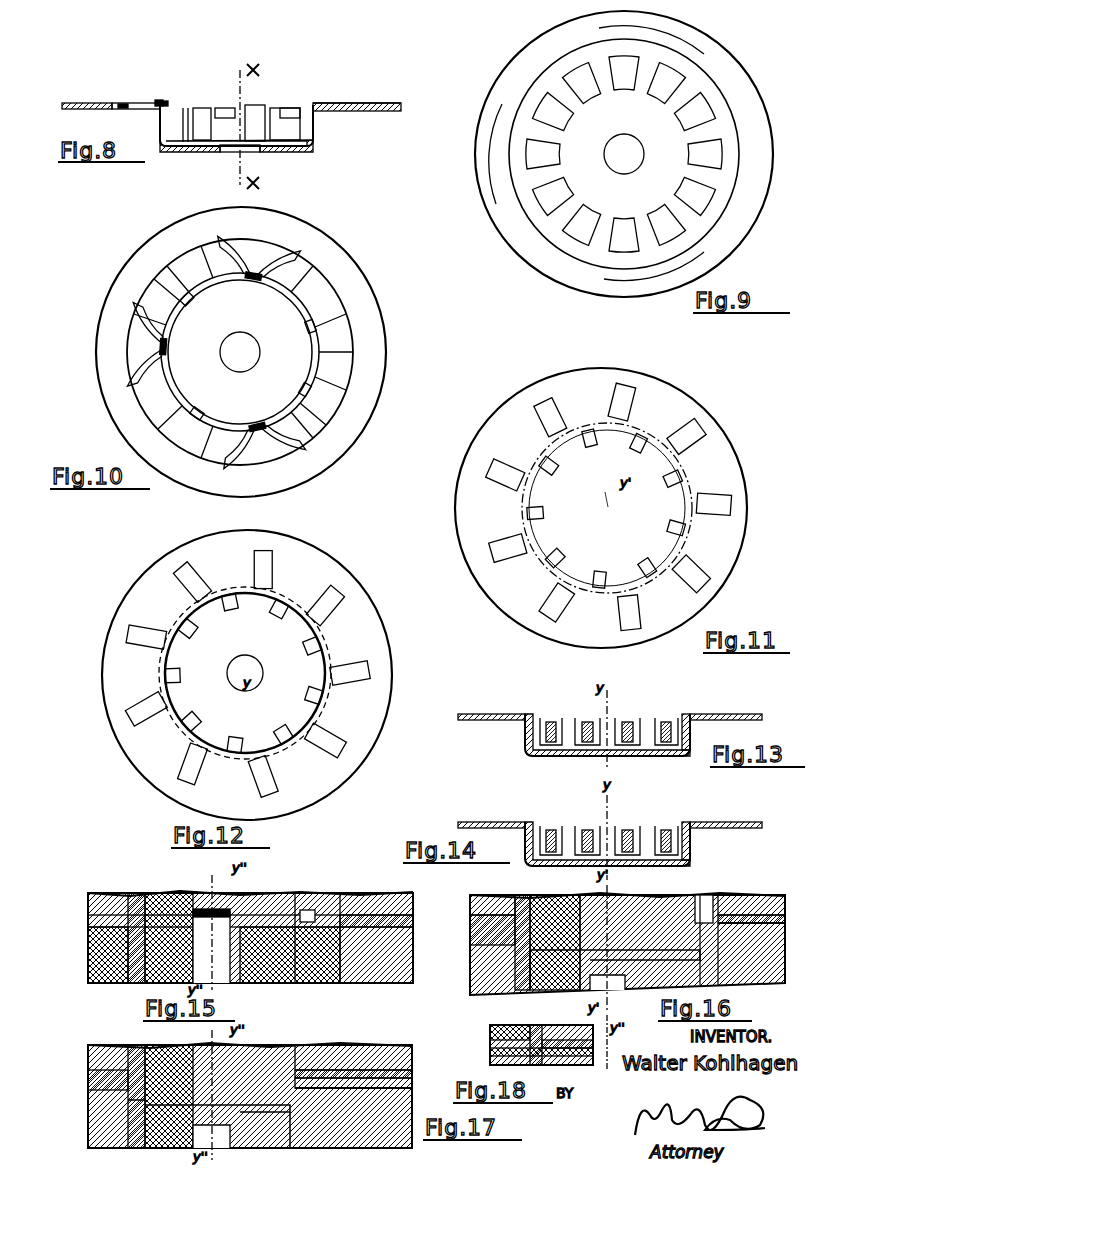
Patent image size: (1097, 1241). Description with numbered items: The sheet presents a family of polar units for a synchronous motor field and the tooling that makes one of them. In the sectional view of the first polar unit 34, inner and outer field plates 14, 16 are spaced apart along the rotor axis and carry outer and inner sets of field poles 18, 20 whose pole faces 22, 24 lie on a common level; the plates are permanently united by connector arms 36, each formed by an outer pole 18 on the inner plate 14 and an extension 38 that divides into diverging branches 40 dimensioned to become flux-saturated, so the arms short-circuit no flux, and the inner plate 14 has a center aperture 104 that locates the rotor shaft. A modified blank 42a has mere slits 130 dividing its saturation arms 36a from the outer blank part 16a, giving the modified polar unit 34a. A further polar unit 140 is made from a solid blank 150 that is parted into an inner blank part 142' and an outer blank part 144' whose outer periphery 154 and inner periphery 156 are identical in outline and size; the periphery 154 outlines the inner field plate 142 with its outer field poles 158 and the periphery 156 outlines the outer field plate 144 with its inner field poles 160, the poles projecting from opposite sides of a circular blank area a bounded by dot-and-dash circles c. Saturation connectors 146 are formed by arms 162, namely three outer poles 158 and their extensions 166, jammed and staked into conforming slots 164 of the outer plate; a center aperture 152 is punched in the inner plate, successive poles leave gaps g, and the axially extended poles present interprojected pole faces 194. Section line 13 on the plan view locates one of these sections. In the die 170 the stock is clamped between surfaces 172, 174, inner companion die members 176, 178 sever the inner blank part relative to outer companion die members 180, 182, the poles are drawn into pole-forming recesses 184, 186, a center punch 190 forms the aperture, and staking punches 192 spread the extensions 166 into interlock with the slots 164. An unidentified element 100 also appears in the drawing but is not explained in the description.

In FIG. 8, the inner field plate 14 is at (285, 155).
In FIG. 12, the inner field plate 14 is at (271, 692).
In FIG. 8, the outer field plate 16 is at (360, 101).
In FIG. 9, the outer blank part 16a is at (641, 154).
In FIG. 10, the outer blank part 16a is at (269, 352).
In FIG. 8, the outer field poles 18 is at (162, 130).
In FIG. 17, the outer field poles 18 is at (305, 1032).
In FIG. 8, the inner field poles 20 is at (184, 108).
In FIG. 8, the pole faces 22 is at (200, 112).
In FIG. 8, the pole faces 24 is at (224, 108).
In FIG. 8, the polar unit 34 is at (335, 72).
In FIG. 10, the modified polar unit 34a is at (244, 352).
In FIG. 8, the connector arms 36 is at (165, 101).
In FIG. 9, the saturation arms 36a is at (619, 129).
In FIG. 10, the saturation arms 36a is at (240, 352).
In FIG. 8, the extensions 38 is at (157, 100).
In FIG. 8, the diverging branches 40 is at (125, 103).
In FIG. 9, the modified blank 42a is at (651, 143).
In FIG. 11, the tooth 100 is at (612, 547).
In FIG. 8, the center aperture 104 is at (232, 152).
In FIG. 9, the slits 130 is at (607, 168).
In FIG. 12, the modified polar unit 140 is at (247, 662).
In FIG. 13, the modified polar unit 140 is at (695, 712).
In FIG. 14, the modified polar unit 140 is at (607, 844).
In FIG. 12, the inner field plate 142 is at (245, 673).
In FIG. 13, the inner field plate 142 is at (545, 776).
In FIG. 14, the inner field plate 142 is at (716, 872).
In FIG. 16, the inner field plate 142 is at (691, 943).
In FIG. 17, the inner field plate 142 is at (302, 1143).
In FIG. 18, the inner field plate 142 is at (634, 1022).
In FIG. 11, the inner blank part 142' is at (607, 502).
In FIG. 15, the inner blank part 142' is at (293, 893).
In FIG. 12, the outer field plate 144 is at (303, 523).
In FIG. 13, the outer field plate 144 is at (610, 698).
In FIG. 14, the outer field plate 144 is at (610, 807).
In FIG. 16, the outer field plate 144 is at (486, 896).
In FIG. 17, the outer field plate 144 is at (378, 1066).
In FIG. 18, the outer field plate 144 is at (598, 1039).
In FIG. 11, the outer blank part 144' is at (707, 378).
In FIG. 15, the outer blank part 144' is at (394, 898).
In FIG. 11, the saturation connectors 146 is at (597, 502).
In FIG. 12, the saturation connectors 146 is at (256, 679).
In FIG. 13, the saturation connectors 146 is at (543, 716).
In FIG. 14, the saturation connectors 146 is at (570, 824).
In FIG. 16, the saturation connectors 146 is at (765, 922).
In FIG. 17, the saturation connectors 146 is at (405, 1088).
In FIG. 11, the solid blank 150 is at (601, 495).
In FIG. 12, the center aperture 152 is at (266, 669).
In FIG. 13, the center aperture 152 is at (620, 752).
In FIG. 16, the center aperture 152 is at (635, 895).
In FIG. 17, the center aperture 152 is at (240, 1118).
In FIG. 11, the outer periphery 154 is at (623, 528).
In FIG. 12, the outer periphery 154 is at (264, 657).
In FIG. 13, the outer periphery 154 is at (527, 756).
In FIG. 14, the outer periphery 154 is at (710, 822).
In FIG. 11, the inner periphery 156 is at (597, 517).
In FIG. 12, the inner periphery 156 is at (235, 671).
In FIG. 13, the inner periphery 156 is at (612, 716).
In FIG. 14, the inner periphery 156 is at (612, 822).
In FIG. 11, the outer field poles 158 is at (609, 508).
In FIG. 12, the outer field poles 158 is at (246, 673).
In FIG. 13, the outer field poles 158 is at (551, 720).
In FIG. 14, the outer field poles 158 is at (548, 828).
In FIG. 16, the outer field poles 158 is at (542, 900).
In FIG. 17, the outer field poles 158 is at (290, 1080).
In FIG. 11, the inner field poles 160 is at (604, 508).
In FIG. 12, the inner field poles 160 is at (244, 673).
In FIG. 13, the inner field poles 160 is at (525, 728).
In FIG. 16, the inner field poles 160 is at (500, 917).
In FIG. 17, the inner field poles 160 is at (110, 1088).
In FIG. 11, the arms 162 is at (621, 533).
In FIG. 12, the arms 162 is at (256, 689).
In FIG. 13, the arms 162 is at (672, 718).
In FIG. 14, the arms 162 is at (560, 830).
In FIG. 15, the arms 162 is at (335, 915).
In FIG. 16, the arms 162 is at (700, 905).
In FIG. 17, the arms 162 is at (298, 1060).
In FIG. 11, the conforming slots 164 is at (601, 535).
In FIG. 12, the conforming slots 164 is at (262, 696).
In FIG. 14, the conforming slots 164 is at (705, 824).
In FIG. 15, the conforming slots 164 is at (405, 940).
In FIG. 16, the conforming slots 164 is at (780, 905).
In FIG. 17, the conforming slots 164 is at (335, 1066).
In FIG. 18, the conforming slots 164 is at (492, 1052).
In FIG. 11, the extensions 166 is at (607, 508).
In FIG. 12, the extensions 166 is at (225, 682).
In FIG. 14, the extensions 166 is at (698, 826).
In FIG. 16, the extensions 166 is at (730, 912).
In FIG. 17, the extensions 166 is at (330, 1060).
In FIG. 18, the extensions 166 is at (580, 1050).
In FIG. 15, the die 170 is at (330, 893).
In FIG. 17, the die 170 is at (400, 1045).
In FIG. 15, the surface 172 is at (135, 915).
In FIG. 15, the surface 174 is at (100, 935).
In FIG. 15, the inner companion die member 176 is at (170, 900).
In FIG. 16, the inner companion die member 176 is at (553, 905).
In FIG. 17, the inner companion die member 176 is at (170, 1055).
In FIG. 15, the inner companion die member 178 is at (318, 908).
In FIG. 16, the inner companion die member 178 is at (775, 893).
In FIG. 17, the inner companion die member 178 is at (370, 1052).
In FIG. 18, the inner companion die member 178 is at (510, 1028).
In FIG. 15, the outer companion die member 180 is at (105, 893).
In FIG. 16, the outer companion die member 180 is at (487, 897).
In FIG. 17, the outer companion die member 180 is at (105, 1047).
In FIG. 18, the outer companion die member 180 is at (490, 1033).
In FIG. 15, the outer companion die member 182 is at (137, 915).
In FIG. 16, the outer companion die member 182 is at (522, 908).
In FIG. 17, the outer companion die member 182 is at (136, 1060).
In FIG. 18, the outer companion die member 182 is at (534, 1028).
In FIG. 16, the pole-forming recesses 184 is at (670, 945).
In FIG. 17, the pole-forming recesses 184 is at (295, 1072).
In FIG. 18, the pole-forming recesses 184 is at (452, 1052).
In FIG. 16, the pole-forming recesses 186 is at (478, 948).
In FIG. 17, the pole-forming recesses 186 is at (112, 1102).
In FIG. 15, the center punch 190 is at (228, 908).
In FIG. 16, the center punch 190 is at (620, 935).
In FIG. 17, the center punch 190 is at (218, 1128).
In FIG. 15, the staking punches 192 is at (290, 914).
In FIG. 16, the staking punches 192 is at (708, 905).
In FIG. 18, the staking punches 192 is at (550, 1028).
In FIG. 13, the interprojected pole faces 194 is at (583, 720).
In FIG. 11, the circular blank area a is at (553, 527).
In FIG. 13, the circular blank area a is at (527, 716).
In FIG. 14, the circular blank area a is at (526, 824).
In FIG. 16, the circular blank area a is at (503, 912).
In FIG. 17, the circular blank area a is at (133, 1070).
In FIG. 11, the dot-and-dash line circles c is at (532, 556).
In FIG. 13, the gaps g is at (565, 748).
In FIG. 14, the gaps g is at (590, 828).
In FIG. 12, the section line 13— 13 is at (248, 702).